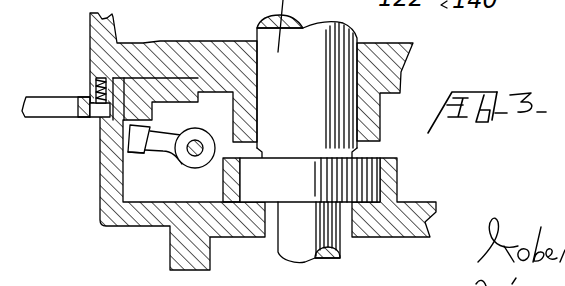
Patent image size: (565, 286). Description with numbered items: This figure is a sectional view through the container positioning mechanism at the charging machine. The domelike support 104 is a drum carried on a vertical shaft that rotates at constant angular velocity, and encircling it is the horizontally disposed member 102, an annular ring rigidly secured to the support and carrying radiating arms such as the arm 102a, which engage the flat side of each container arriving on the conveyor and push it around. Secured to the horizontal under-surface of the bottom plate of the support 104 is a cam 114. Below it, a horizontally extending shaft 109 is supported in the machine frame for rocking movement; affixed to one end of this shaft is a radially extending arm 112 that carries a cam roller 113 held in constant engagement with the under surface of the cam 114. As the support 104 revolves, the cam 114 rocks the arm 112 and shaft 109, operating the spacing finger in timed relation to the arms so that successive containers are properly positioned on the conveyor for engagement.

The domelike support 104 is at (100, 32).
The horizontally disposed member 102 is at (38, 103).
The radiating arm 102a is at (82, 115).
The cam 114 is at (130, 125).
The cam roller 113 is at (128, 151).
The radially extending arm 112 is at (168, 154).
The horizontally extending shaft 109 is at (178, 161).